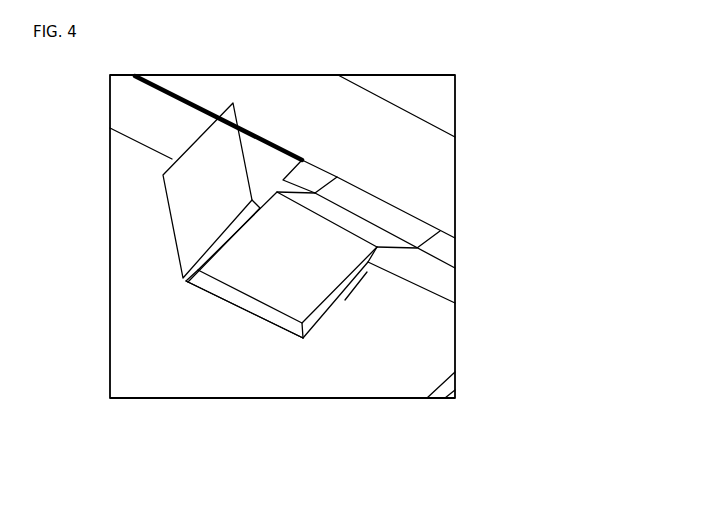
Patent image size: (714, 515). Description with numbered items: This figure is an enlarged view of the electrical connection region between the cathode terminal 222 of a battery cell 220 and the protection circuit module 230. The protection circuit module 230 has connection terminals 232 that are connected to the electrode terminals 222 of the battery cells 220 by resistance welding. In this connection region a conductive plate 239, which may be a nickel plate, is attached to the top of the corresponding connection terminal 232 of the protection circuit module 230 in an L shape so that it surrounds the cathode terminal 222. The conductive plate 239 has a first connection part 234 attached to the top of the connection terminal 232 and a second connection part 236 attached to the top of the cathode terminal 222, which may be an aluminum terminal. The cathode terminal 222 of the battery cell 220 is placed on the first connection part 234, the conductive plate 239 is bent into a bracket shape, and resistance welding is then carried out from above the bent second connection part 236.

The battery cell 220 is at (443, 103).
The cathode terminal 222 is at (348, 247).
The protection circuit module 230 is at (397, 372).
The connection terminal 232 is at (345, 300).
The first connection part 234 is at (210, 288).
The second connection part 236 is at (200, 187).
The conductive plate 239 is at (258, 323).